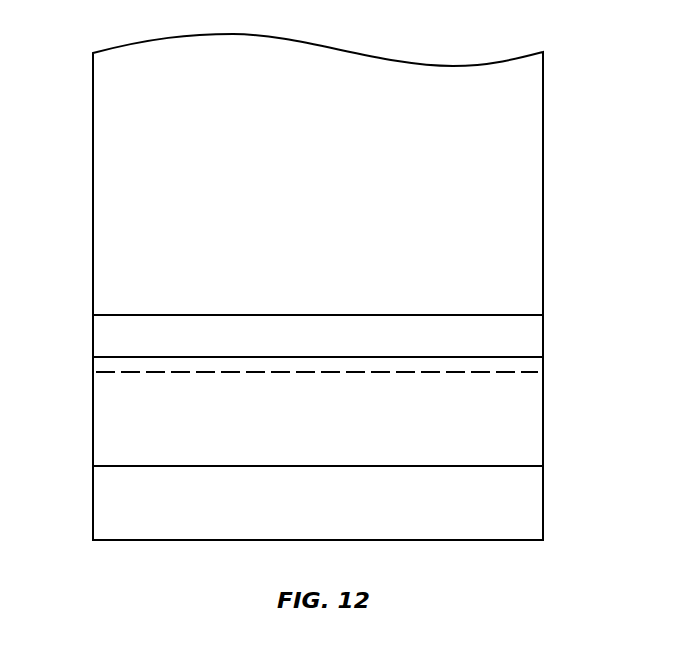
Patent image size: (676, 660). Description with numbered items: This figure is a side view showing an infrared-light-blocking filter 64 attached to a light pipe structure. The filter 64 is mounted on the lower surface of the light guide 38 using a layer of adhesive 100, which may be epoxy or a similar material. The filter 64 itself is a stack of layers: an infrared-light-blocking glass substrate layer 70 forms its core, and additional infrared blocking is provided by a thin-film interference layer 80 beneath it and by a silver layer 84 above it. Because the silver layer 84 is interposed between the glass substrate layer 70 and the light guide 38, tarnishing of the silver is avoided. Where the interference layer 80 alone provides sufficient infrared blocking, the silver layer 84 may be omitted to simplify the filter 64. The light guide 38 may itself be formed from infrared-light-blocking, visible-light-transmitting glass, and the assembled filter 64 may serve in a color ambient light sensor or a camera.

The light guide 38 is at (532, 131).
The layer of adhesive 100 is at (100, 332).
The silver layer 84 is at (538, 364).
The infrared-light-blocking glass substrate layer 70 is at (538, 430).
The thin-film interference layer 80 is at (538, 506).
The filter 64 is at (68, 372).